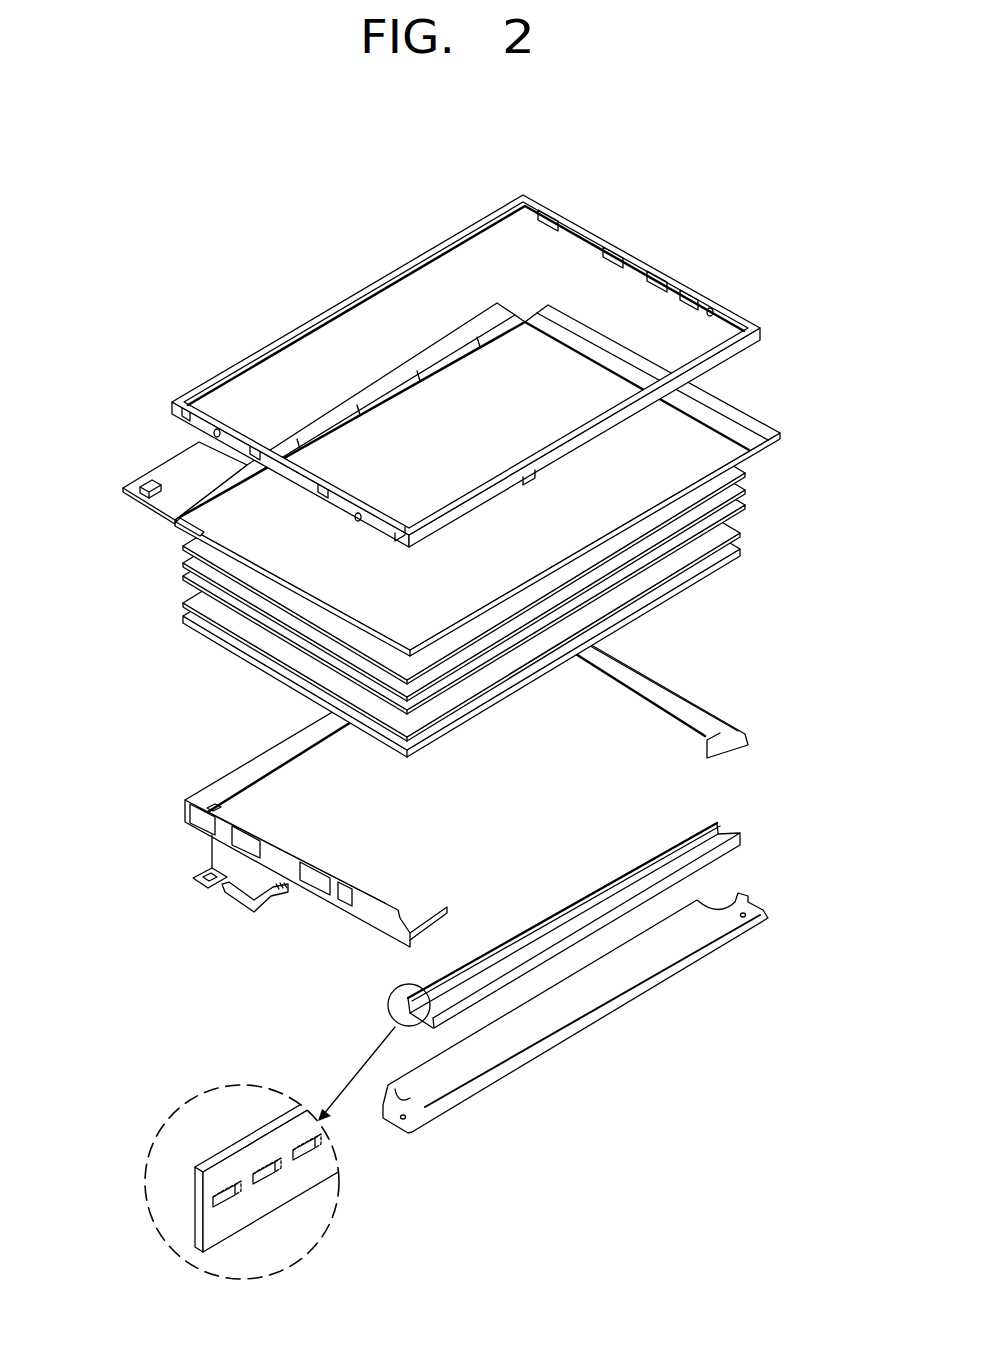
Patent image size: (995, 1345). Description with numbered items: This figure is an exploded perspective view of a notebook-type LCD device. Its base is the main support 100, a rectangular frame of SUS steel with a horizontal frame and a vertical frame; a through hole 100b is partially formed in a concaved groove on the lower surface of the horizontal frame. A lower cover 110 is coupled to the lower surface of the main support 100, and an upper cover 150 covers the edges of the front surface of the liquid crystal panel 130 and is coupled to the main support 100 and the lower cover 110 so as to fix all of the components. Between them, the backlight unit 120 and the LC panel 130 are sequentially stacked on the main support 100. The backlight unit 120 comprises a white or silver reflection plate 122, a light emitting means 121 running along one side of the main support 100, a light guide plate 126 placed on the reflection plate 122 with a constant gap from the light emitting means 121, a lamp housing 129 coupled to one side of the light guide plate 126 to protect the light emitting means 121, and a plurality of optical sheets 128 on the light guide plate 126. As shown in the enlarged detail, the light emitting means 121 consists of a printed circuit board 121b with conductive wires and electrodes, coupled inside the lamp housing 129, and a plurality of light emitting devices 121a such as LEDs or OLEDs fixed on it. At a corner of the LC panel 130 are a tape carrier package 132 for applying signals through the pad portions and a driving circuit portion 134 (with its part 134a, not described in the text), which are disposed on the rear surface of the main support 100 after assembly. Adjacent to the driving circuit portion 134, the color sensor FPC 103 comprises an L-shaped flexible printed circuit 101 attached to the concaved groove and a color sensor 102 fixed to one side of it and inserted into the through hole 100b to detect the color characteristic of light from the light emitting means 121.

The main support 100 is at (340, 928).
The through hole 100b is at (208, 806).
The flexible printed circuit 101 is at (220, 897).
The color sensor 102 is at (198, 878).
The color sensor FPC 103 is at (78, 848).
The lower cover 110 is at (787, 913).
The backlight unit 120 is at (822, 860).
The light emitting means 121 is at (740, 824).
The light emitting devices 121a is at (282, 1168).
The printed circuit board 121b is at (267, 1197).
The reflection plate 122 is at (742, 552).
The light guide plate 126 is at (742, 534).
The optical sheets 128 is at (752, 473).
The lamp housing 129 is at (745, 841).
The liquid crystal panel 130 is at (693, 433).
The tape carrier package 132 is at (185, 517).
The driving circuit portion 134 is at (177, 466).
The connector of printed circuit board 134a is at (142, 487).
The upper cover 150 is at (737, 320).